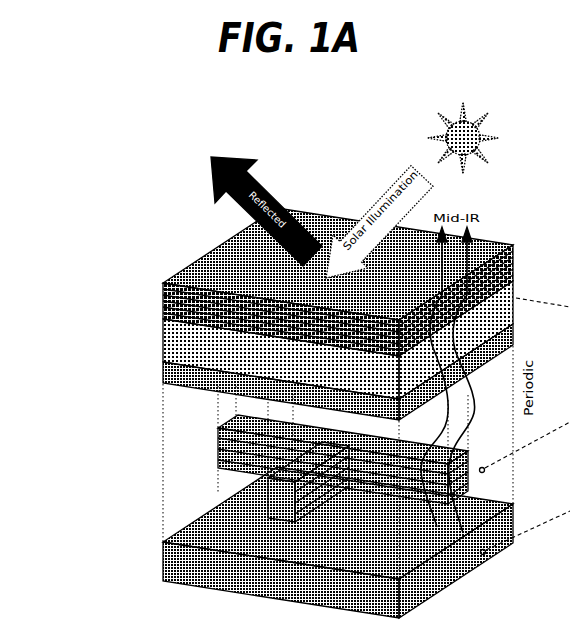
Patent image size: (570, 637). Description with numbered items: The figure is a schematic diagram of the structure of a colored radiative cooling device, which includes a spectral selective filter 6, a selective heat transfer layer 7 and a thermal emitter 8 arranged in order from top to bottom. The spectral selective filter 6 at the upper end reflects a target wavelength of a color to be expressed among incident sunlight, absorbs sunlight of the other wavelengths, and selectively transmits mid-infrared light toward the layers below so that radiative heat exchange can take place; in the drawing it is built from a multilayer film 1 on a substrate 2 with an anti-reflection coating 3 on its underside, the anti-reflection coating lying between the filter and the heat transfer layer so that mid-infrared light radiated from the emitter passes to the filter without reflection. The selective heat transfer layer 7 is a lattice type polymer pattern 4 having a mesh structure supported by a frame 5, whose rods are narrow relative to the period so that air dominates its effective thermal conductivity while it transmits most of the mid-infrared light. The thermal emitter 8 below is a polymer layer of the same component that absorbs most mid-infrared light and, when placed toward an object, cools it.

The multilayer film 1 is at (338, 300).
The substrate 2 is at (338, 340).
The anti-reflection coating 3 is at (233, 310).
The pattern 4 is at (343, 459).
The frame 5 is at (302, 482).
The spectral selective filter (SSF) 6 is at (275, 314).
The selective heat transfer layer (SHTL) 7 is at (251, 468).
The thermal emitter (TE) 8 is at (275, 542).